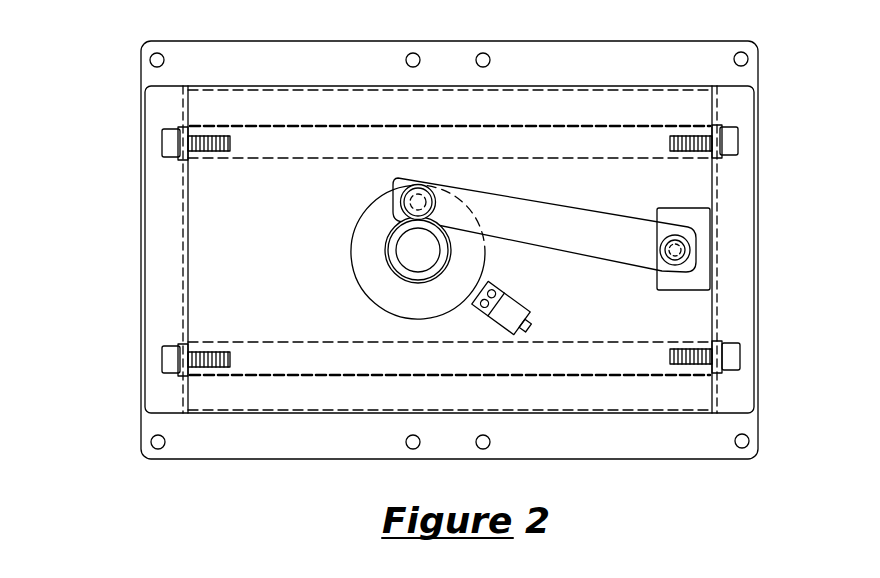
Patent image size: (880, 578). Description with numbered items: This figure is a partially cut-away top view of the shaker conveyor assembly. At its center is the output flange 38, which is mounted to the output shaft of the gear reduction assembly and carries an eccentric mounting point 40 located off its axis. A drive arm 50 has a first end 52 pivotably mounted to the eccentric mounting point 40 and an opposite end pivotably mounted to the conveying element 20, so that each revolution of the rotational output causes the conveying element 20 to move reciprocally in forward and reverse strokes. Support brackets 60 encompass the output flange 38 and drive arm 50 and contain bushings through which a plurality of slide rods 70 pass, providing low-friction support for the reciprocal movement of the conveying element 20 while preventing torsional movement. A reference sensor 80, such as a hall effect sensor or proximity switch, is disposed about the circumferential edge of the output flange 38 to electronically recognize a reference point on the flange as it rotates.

The conveying element 20 is at (400, 250).
The output flange 38 is at (352, 277).
The eccentric mounting point 40 is at (394, 200).
The drive arm 50 is at (547, 203).
The first end 52 is at (398, 180).
The support brackets 60 is at (145, 147).
The slide rods 70 is at (218, 163).
The reference sensor 80 is at (521, 302).